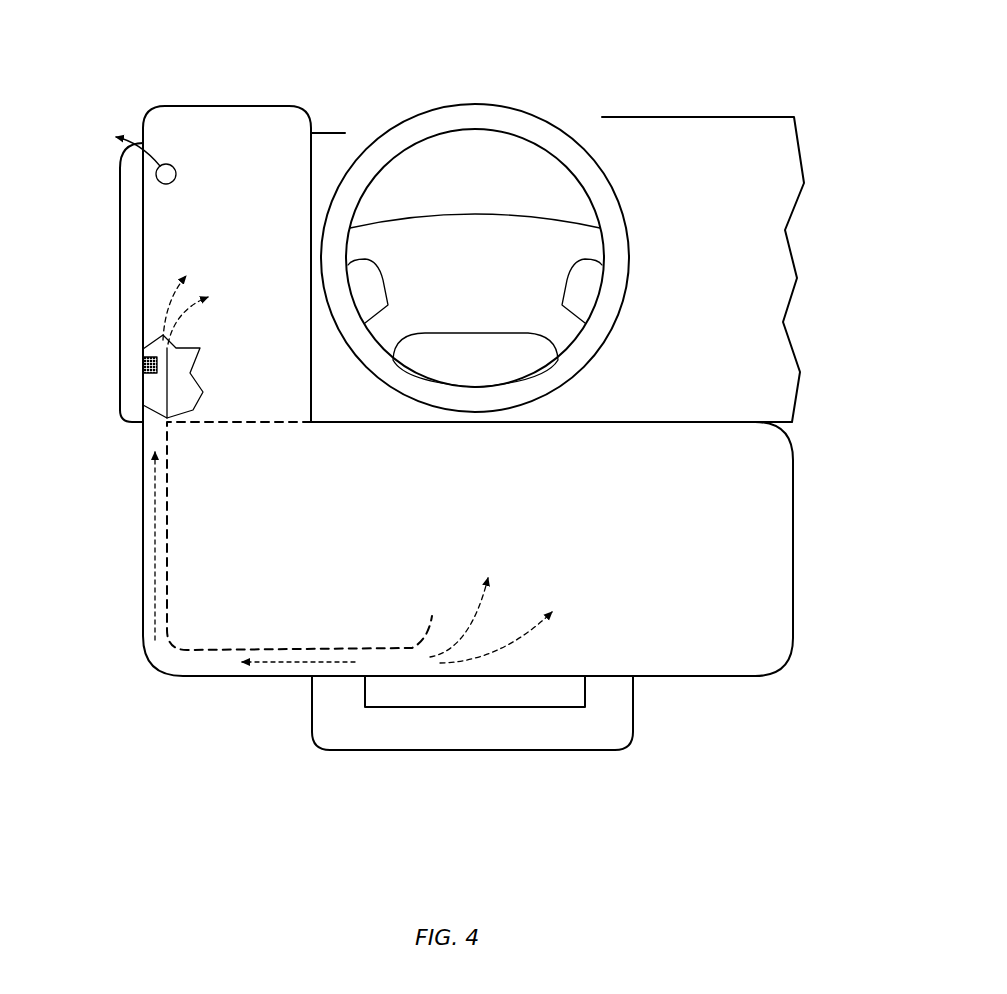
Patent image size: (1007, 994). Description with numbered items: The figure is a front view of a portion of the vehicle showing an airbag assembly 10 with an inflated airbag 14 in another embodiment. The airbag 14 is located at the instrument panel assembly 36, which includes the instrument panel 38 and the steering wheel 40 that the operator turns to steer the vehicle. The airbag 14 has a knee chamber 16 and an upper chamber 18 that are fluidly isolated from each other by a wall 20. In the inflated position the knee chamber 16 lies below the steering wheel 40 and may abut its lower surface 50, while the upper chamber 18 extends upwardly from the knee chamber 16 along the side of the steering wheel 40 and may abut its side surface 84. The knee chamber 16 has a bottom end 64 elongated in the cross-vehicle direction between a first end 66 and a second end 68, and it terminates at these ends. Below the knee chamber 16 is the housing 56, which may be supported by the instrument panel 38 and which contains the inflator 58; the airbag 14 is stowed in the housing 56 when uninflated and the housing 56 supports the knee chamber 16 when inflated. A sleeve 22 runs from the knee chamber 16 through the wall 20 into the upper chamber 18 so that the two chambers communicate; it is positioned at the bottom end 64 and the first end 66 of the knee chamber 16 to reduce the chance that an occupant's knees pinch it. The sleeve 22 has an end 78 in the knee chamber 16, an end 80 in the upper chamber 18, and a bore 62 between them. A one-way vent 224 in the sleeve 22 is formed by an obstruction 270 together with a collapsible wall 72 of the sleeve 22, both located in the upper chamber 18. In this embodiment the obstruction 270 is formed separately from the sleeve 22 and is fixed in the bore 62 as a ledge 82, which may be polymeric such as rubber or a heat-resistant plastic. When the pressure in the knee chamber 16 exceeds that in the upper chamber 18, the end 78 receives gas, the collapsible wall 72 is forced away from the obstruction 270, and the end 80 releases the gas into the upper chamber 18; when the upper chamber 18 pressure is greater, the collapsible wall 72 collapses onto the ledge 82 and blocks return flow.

The airbag assembly 10 is at (96, 66).
The airbag 14 is at (206, 102).
The knee chamber 16 is at (794, 490).
The upper chamber 18 is at (297, 106).
The wall 20 is at (265, 425).
The sleeve 22 is at (203, 655).
The instrument panel assembly 36 is at (795, 116).
The instrument panel 38 is at (718, 117).
The steering wheel 40 is at (440, 104).
The lower surface 50 is at (472, 413).
The housing 56 is at (335, 752).
The inflator 58 is at (548, 708).
The bore 62 is at (143, 648).
The bottom end 64 is at (668, 678).
The first end 66 is at (142, 565).
The second end 68 is at (794, 537).
The collapsible wall 72 is at (165, 345).
The end 78 is at (425, 645).
The end 80 is at (167, 388).
The ledge 82 is at (148, 375).
The side surface 84 is at (322, 243).
The one-way vent 224 is at (136, 364).
The obstruction 270 is at (145, 362).